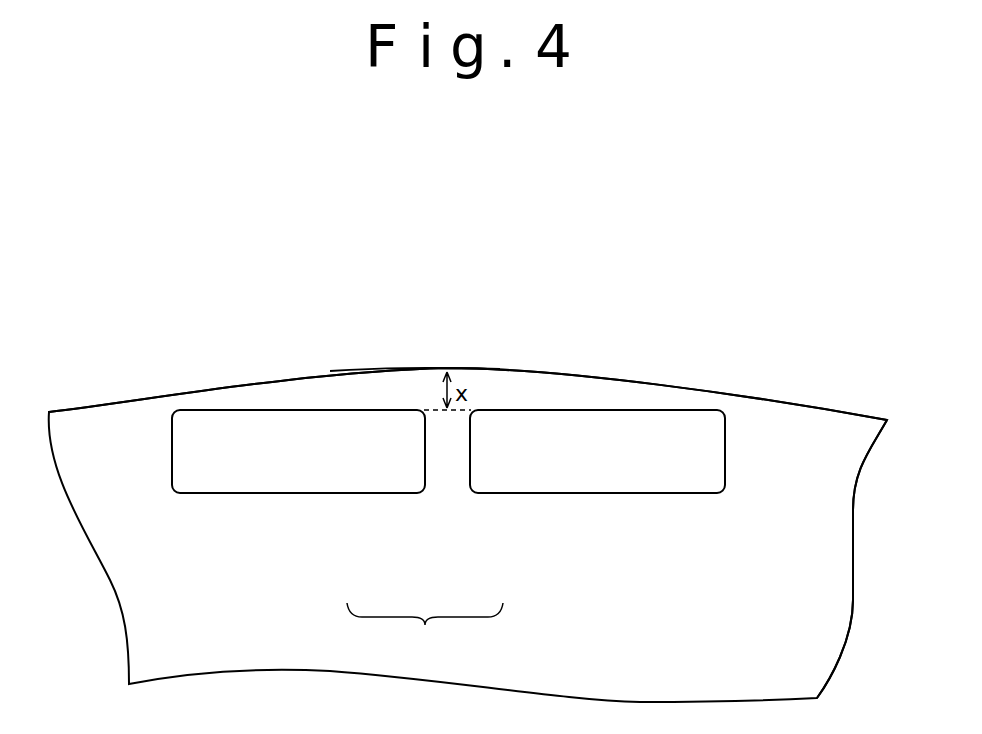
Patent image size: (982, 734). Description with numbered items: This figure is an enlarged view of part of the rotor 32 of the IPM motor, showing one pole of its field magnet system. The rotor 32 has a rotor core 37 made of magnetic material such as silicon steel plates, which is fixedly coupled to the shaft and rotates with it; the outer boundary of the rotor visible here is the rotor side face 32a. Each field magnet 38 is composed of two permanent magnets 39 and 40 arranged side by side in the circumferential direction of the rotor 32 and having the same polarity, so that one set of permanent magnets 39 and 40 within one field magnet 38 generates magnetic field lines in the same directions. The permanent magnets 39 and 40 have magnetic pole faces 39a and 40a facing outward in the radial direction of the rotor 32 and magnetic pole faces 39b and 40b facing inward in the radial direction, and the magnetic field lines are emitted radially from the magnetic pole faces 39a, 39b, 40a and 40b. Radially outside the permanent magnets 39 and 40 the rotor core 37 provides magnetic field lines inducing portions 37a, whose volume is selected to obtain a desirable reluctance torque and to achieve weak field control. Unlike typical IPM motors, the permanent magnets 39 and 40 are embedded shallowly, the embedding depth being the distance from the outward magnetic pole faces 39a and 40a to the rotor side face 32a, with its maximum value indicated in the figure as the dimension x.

The rotor 32 is at (668, 338).
The rotor side face 32a is at (832, 409).
The rotor core 37 is at (143, 410).
The magnetic field lines inducing portion 37a is at (510, 390).
The field magnet 38 is at (425, 632).
The permanent magnet 39 is at (393, 487).
The magnetic pole face 39a is at (270, 411).
The magnetic pole face 39b is at (345, 495).
The permanent magnet 40 is at (503, 487).
The magnetic pole face 40a is at (625, 410).
The magnetic pole face 40b is at (548, 495).